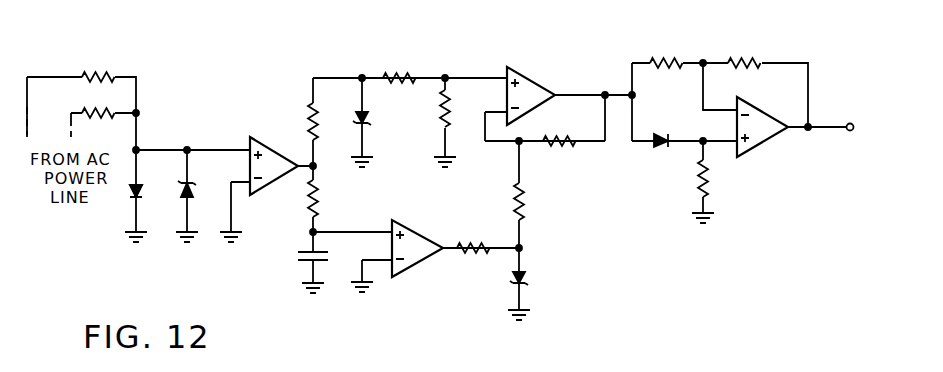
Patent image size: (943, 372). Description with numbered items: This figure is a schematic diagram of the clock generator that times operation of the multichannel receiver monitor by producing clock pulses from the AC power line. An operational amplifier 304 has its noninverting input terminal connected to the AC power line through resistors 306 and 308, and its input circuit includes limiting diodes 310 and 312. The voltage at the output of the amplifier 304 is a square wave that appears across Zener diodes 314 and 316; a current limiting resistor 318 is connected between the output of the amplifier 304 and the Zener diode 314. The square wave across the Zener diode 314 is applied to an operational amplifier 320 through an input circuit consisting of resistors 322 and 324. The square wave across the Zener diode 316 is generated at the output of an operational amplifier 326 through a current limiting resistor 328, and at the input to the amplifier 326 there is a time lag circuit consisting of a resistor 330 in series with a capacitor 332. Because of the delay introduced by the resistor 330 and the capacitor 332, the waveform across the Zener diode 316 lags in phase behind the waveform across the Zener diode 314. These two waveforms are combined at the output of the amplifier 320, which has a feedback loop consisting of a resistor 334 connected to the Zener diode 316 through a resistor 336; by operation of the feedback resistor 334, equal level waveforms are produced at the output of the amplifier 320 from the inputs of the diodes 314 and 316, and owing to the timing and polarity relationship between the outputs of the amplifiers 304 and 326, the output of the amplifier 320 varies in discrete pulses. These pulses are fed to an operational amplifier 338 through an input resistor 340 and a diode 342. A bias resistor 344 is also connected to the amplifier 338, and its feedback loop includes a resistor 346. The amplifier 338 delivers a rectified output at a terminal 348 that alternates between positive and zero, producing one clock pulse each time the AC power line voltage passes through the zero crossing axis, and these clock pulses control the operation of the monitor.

The operational amplifier 304 is at (248, 149).
The resistor 306 is at (99, 72).
The resistor 308 is at (100, 108).
The limiting diode 310 is at (141, 188).
The limiting diode 312 is at (182, 193).
The Zener diode 314 is at (367, 119).
The Zener diode 316 is at (529, 278).
The current limiting resistor 318 is at (310, 114).
The operational amplifier 320 is at (524, 70).
The resistor 322 is at (411, 73).
The resistor 324 is at (440, 110).
The operational amplifier 326 is at (399, 214).
The current limiting resistor 328 is at (470, 255).
The resistor 330 is at (318, 206).
The capacitor 332 is at (298, 257).
The feedback resistor 334 is at (561, 146).
The resistor 336 is at (524, 209).
The operational amplifier 338 is at (779, 121).
The input resistor 340 is at (661, 58).
The diode 342 is at (658, 147).
The bias resistor 344 is at (710, 182).
The resistor 346 is at (758, 60).
The terminal 348 is at (850, 122).